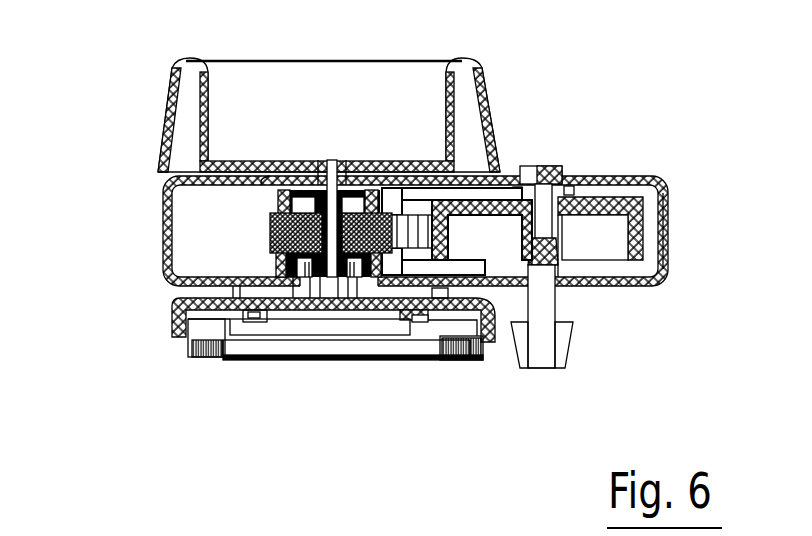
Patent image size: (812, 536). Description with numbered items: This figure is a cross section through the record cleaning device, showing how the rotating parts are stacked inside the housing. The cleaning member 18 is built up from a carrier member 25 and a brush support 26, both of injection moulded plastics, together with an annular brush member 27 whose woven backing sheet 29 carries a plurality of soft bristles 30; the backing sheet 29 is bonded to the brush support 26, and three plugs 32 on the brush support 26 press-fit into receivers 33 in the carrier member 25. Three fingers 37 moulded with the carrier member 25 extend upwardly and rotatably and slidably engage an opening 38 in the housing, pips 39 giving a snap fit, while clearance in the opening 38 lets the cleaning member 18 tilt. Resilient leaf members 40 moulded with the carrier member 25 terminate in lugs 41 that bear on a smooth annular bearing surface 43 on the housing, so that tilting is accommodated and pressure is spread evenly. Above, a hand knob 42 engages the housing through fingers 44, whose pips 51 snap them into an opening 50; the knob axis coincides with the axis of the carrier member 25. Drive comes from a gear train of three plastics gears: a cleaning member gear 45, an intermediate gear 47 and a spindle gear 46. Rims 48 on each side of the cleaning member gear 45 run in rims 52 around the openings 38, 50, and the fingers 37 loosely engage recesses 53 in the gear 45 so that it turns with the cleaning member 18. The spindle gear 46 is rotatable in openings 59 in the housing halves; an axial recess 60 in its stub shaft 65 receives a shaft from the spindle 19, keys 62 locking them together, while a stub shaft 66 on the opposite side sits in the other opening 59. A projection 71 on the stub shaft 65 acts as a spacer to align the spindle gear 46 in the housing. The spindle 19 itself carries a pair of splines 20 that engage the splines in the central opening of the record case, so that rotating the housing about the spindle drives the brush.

The cleaning member 18 is at (126, 392).
The spindle 19 is at (542, 357).
The splines 20 is at (567, 333).
The carrier member 25 is at (173, 307).
The brush support 26 is at (340, 365).
The brush member 27 is at (440, 362).
The backing sheet 29 is at (200, 344).
The bristles 30 is at (467, 362).
The plugs 32 is at (220, 355).
The receivers 33 is at (228, 330).
The fingers 37 is at (288, 335).
The opening 38 is at (323, 312).
The pips 39 is at (265, 250).
The resilient members 40 is at (215, 362).
The lugs 41 is at (236, 292).
The hand knob 42 is at (372, 72).
The bearing surface 43 is at (234, 277).
The fingers 44 is at (357, 172).
The cleaning member gear 45 is at (265, 235).
The spindle gear 46 is at (600, 256).
The intermediate gear 47 is at (540, 167).
The rims 48 is at (275, 190).
The opening 50 is at (331, 185).
The pips 51 is at (418, 208).
The rims 52 is at (298, 185).
The recesses 53 is at (265, 213).
The openings 59 is at (640, 177).
The axial recess 60 is at (576, 186).
The keys 62 is at (637, 240).
The stub shaft 65 is at (520, 245).
The stub shaft 66 is at (570, 186).
The projection 71 is at (560, 165).